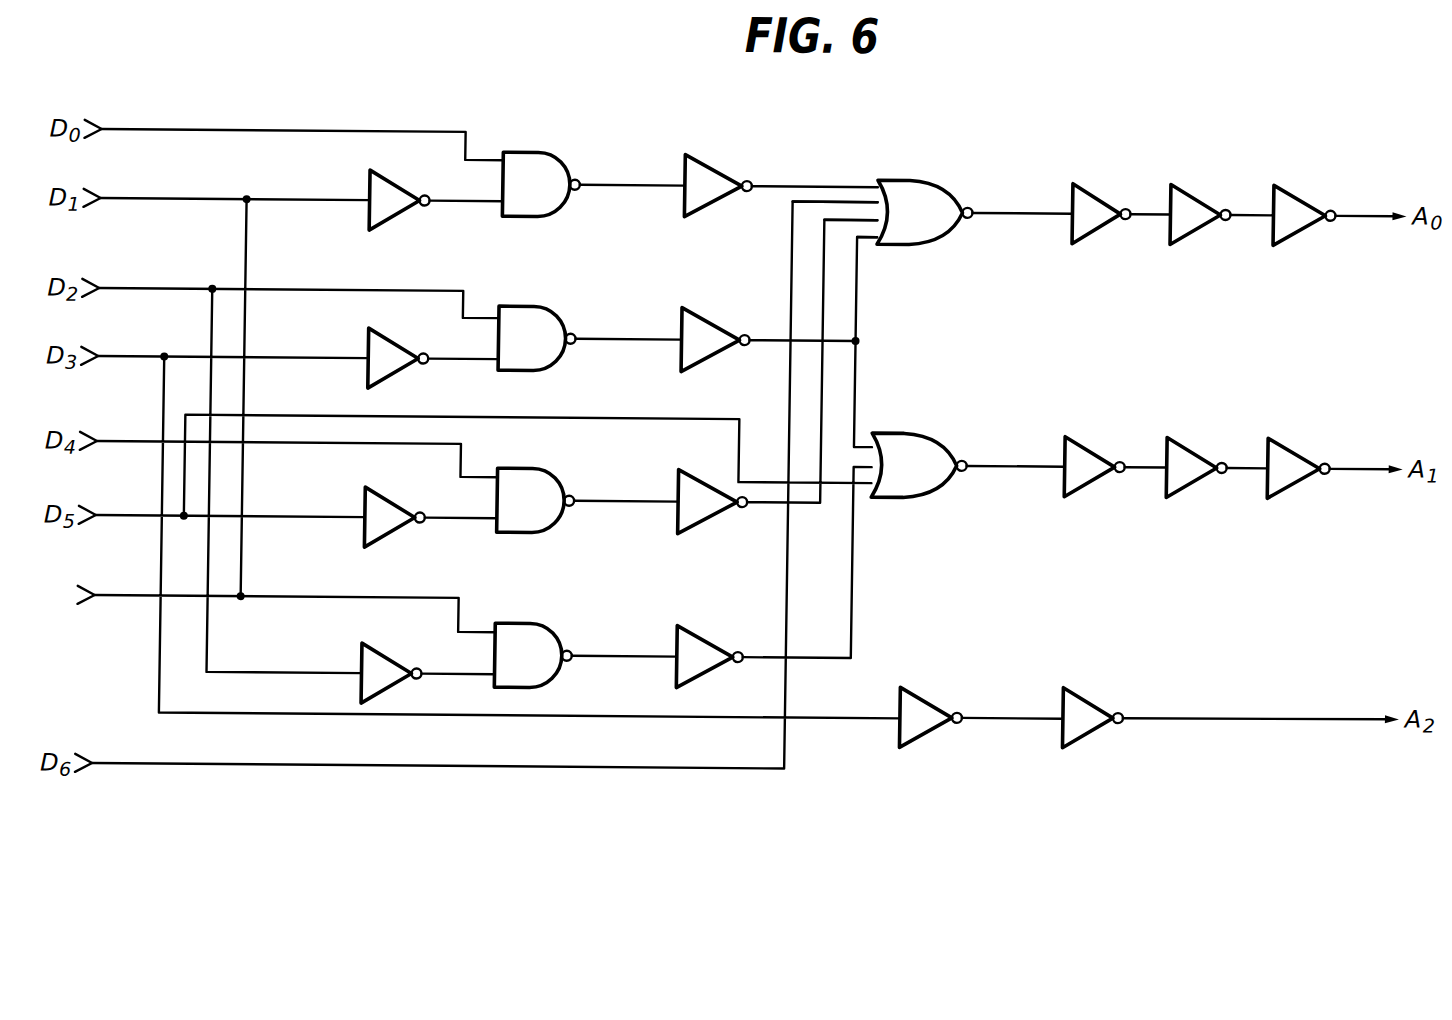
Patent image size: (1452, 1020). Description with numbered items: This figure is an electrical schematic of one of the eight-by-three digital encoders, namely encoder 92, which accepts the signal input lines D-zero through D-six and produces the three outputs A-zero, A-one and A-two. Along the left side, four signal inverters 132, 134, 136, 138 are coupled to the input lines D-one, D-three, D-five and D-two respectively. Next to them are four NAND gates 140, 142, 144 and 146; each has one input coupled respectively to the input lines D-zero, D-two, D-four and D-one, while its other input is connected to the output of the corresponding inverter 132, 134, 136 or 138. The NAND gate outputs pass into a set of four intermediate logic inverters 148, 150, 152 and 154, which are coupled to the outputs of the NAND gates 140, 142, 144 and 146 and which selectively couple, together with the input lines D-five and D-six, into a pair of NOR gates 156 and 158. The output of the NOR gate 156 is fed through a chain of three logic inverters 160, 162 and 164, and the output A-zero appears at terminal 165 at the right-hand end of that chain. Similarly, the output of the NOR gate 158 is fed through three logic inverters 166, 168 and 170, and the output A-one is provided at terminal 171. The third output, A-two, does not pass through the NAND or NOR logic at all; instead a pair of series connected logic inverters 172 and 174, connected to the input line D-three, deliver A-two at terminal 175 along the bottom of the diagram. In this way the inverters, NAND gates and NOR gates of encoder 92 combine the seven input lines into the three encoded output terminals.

The encoder 92 is at (858, 166).
The signal inverter 132 is at (396, 211).
The signal inverter 134 is at (395, 371).
The signal inverter 136 is at (402, 534).
The signal inverter 138 is at (390, 629).
The NAND gate 140 is at (546, 152).
The NAND gate 142 is at (548, 312).
The NAND gate 144 is at (551, 472).
The NAND gate 146 is at (544, 627).
The intermediate logic inverter 148 is at (708, 156).
The intermediate logic inverter 150 is at (704, 311).
The intermediate logic inverter 152 is at (712, 478).
The intermediate logic inverter 154 is at (694, 630).
The NOR gate 156 is at (932, 225).
The NOR gate 158 is at (927, 430).
The logic inverter 160 is at (1089, 219).
The logic inverter 162 is at (1179, 221).
The logic inverter 164 is at (1281, 221).
The terminal 165 is at (1329, 217).
The logic inverter 166 is at (1077, 436).
The logic inverter 168 is at (1187, 442).
The logic inverter 170 is at (1292, 444).
The terminal 171 is at (1326, 473).
The logic inverter 172 is at (928, 694).
The logic inverter 174 is at (1090, 693).
The terminal 175 is at (1125, 712).